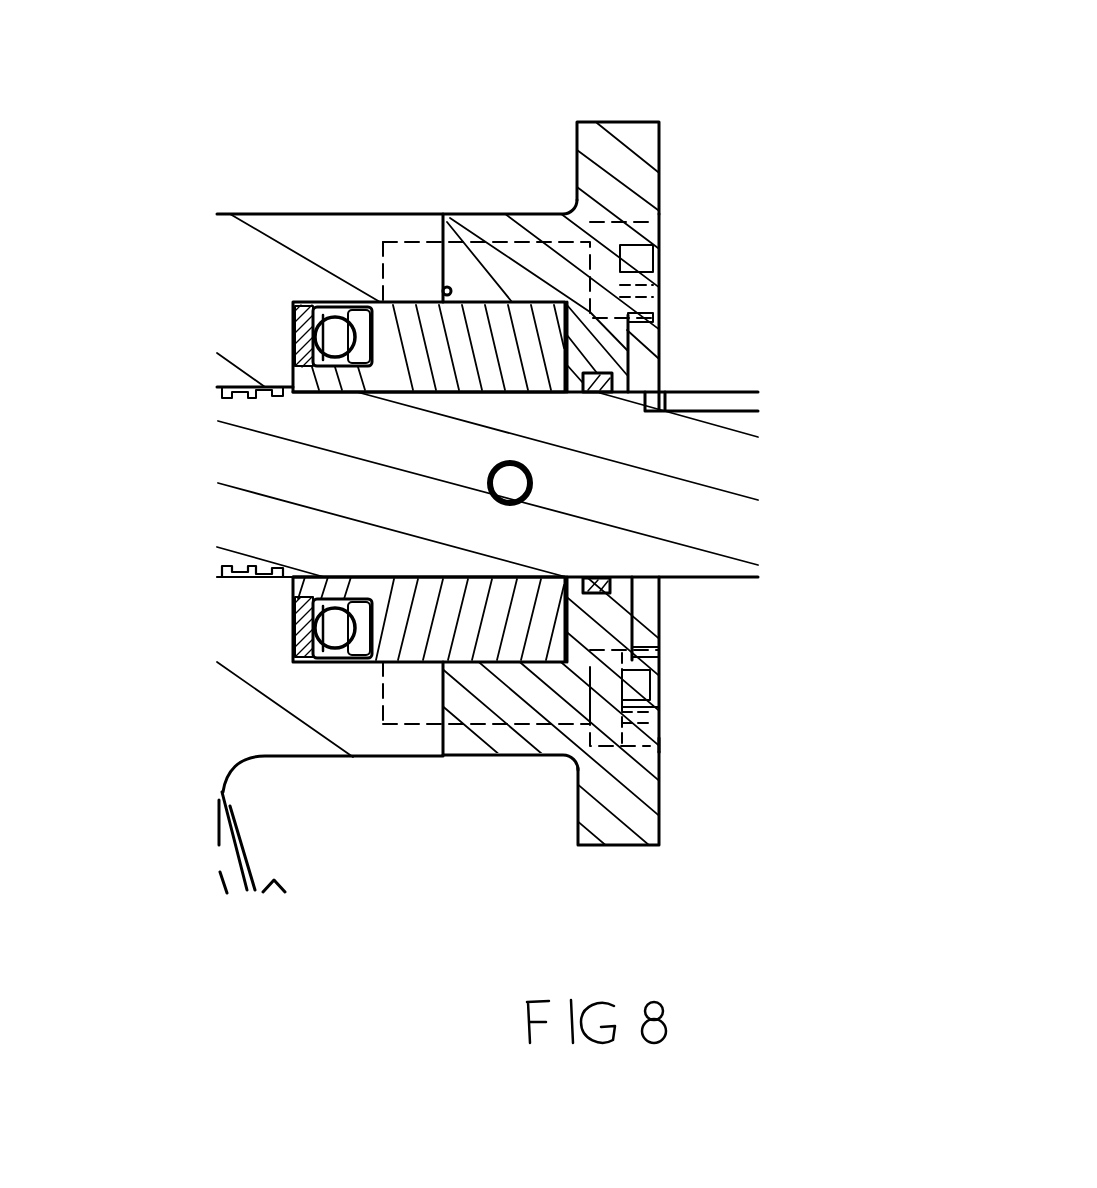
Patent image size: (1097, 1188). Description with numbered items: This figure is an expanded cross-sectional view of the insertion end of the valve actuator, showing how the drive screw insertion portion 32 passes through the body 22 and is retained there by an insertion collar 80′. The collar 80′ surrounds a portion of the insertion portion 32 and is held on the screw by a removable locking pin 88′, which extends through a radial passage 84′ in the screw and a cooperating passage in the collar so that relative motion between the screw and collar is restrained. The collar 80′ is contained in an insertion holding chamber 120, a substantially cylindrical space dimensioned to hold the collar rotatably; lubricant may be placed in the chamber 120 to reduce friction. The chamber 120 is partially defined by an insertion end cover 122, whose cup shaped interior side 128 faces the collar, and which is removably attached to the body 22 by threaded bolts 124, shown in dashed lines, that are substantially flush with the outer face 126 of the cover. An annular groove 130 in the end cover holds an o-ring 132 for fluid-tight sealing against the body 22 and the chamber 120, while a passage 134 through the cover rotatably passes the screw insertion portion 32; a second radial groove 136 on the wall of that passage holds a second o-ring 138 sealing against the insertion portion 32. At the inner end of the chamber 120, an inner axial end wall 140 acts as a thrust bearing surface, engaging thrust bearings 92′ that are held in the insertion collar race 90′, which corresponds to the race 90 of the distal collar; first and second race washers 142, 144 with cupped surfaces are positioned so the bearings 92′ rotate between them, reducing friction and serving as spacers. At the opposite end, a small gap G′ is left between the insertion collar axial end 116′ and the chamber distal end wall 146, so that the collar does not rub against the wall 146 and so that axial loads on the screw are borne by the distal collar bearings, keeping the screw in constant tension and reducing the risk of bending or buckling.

The body 22 is at (230, 212).
The insertion holding chamber 120 is at (327, 302).
The insertion collar 80′ is at (397, 302).
The o-ring 132 is at (447, 288).
The insertion end cover 122 is at (605, 148).
The annular groove 130 is at (450, 288).
The outer face 126 is at (659, 186).
The threaded bolts 124 is at (622, 255).
The first race washer 142 is at (308, 663).
The second radial groove 136 is at (600, 385).
The second o-ring 138 is at (597, 393).
The thrust bearings 92′ is at (343, 663).
The second race washer 144 is at (368, 577).
The insertion collar race 90′ is at (373, 338).
The radial passage 84′ is at (537, 487).
The locking pin 88′ is at (487, 475).
The passage 134 is at (620, 577).
The drive screw insertion portion 32 is at (677, 518).
The chamber distal end wall 146 is at (632, 632).
The gap G′ is at (658, 738).
The inner axial end wall 140 is at (295, 645).
The race 90 is at (397, 662).
The cup shaped interior side 128 is at (445, 640).
The insertion collar axial end 116′ is at (562, 628).